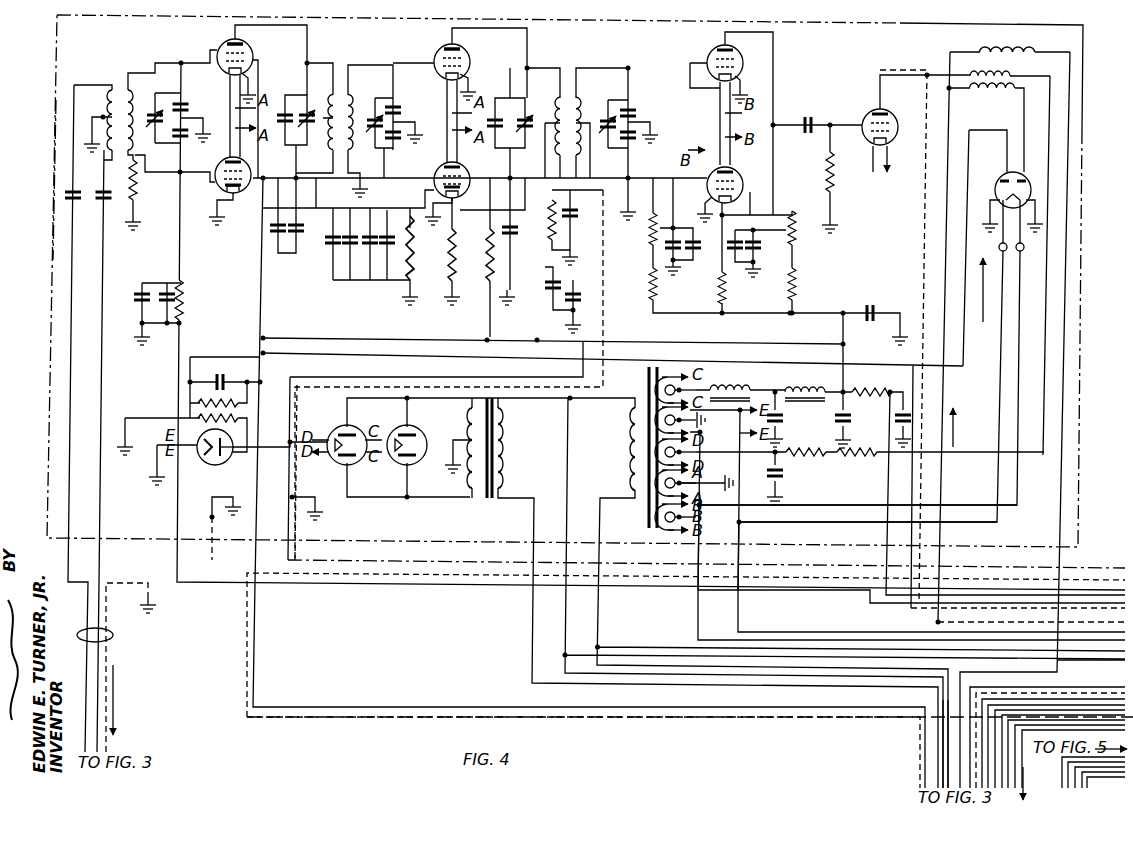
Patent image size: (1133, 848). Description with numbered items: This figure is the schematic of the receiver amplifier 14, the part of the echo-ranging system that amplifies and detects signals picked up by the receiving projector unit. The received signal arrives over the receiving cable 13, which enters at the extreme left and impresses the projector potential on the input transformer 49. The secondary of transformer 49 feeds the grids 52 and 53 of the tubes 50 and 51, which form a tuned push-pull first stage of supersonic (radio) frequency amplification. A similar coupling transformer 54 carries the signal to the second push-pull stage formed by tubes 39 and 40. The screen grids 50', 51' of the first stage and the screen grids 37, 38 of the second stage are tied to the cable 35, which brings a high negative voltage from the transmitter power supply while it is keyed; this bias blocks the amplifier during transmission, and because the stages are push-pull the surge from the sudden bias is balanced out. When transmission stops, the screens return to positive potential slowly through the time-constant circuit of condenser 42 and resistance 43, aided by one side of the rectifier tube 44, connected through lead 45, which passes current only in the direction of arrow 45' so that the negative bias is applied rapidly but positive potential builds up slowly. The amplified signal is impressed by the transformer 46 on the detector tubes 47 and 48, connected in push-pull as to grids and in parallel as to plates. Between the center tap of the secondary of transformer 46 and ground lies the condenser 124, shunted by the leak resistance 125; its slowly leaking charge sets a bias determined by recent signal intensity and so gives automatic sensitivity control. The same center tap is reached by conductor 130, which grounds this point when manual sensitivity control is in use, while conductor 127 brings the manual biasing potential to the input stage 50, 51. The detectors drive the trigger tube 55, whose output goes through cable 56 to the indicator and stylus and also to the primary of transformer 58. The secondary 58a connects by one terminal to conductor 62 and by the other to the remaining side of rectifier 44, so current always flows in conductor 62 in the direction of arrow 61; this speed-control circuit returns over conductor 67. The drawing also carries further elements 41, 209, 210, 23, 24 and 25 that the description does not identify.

The receiver amplifier 14 is at (57, 175).
The receiving cable 13 is at (112, 633).
The input transformer 49 is at (118, 85).
The tube 51 is at (226, 49).
The screen grid 51' is at (258, 44).
The grid 53 is at (251, 68).
The grid 52 is at (251, 175).
The tube 50 is at (214, 194).
The screen grid 50' is at (231, 216).
The coupling transformer 54 is at (338, 95).
The tube 40 is at (438, 50).
The screen grid 38 is at (470, 62).
The screen grid 37 is at (434, 183).
The tube 39 is at (440, 194).
The condenser 41 is at (512, 238).
The detector input transformer 46 is at (565, 95).
The condenser 124 is at (575, 212).
The leak resistance 125 is at (562, 222).
The detector tube 48 is at (710, 54).
The detector tube 47 is at (707, 185).
The trigger tube 55 is at (868, 112).
The cable 56 is at (923, 218).
The transformer 58 is at (985, 70).
The secondary 58a is at (997, 95).
The rectifier tube 44 is at (1030, 175).
The arrow 45' is at (987, 303).
The lead 45 is at (597, 343).
The conductor 130 is at (588, 350).
The conductor 127 is at (186, 327).
The condenser 42 is at (220, 372).
The resistance 43 is at (237, 403).
The cable 35 is at (258, 504).
The conductor 62 is at (944, 390).
The arrow 61 is at (957, 432).
The conductor 209 is at (697, 605).
The conductor 210 is at (745, 620).
The conductor 67 is at (972, 707).
The conductor 24 is at (944, 745).
The conductor 25 is at (949, 770).
The conductors 23 is at (1030, 776).